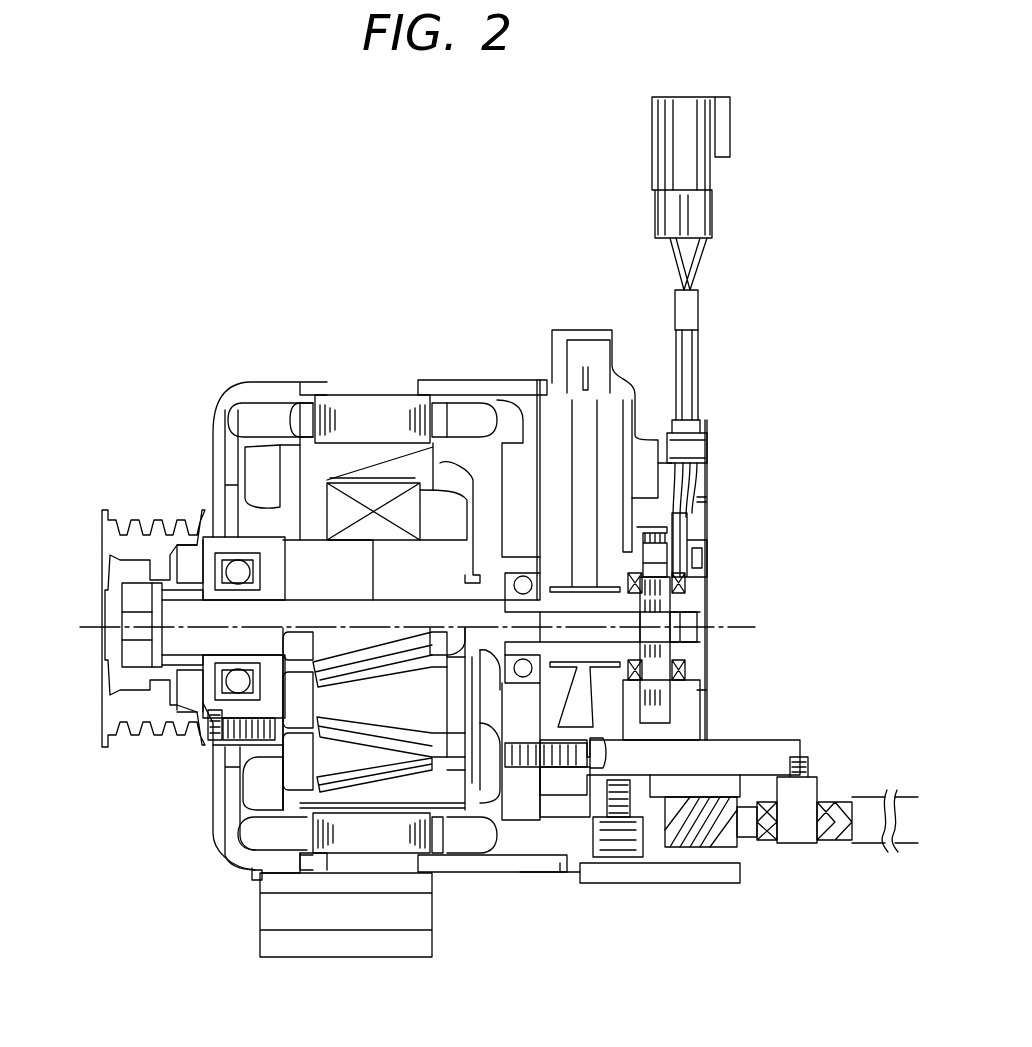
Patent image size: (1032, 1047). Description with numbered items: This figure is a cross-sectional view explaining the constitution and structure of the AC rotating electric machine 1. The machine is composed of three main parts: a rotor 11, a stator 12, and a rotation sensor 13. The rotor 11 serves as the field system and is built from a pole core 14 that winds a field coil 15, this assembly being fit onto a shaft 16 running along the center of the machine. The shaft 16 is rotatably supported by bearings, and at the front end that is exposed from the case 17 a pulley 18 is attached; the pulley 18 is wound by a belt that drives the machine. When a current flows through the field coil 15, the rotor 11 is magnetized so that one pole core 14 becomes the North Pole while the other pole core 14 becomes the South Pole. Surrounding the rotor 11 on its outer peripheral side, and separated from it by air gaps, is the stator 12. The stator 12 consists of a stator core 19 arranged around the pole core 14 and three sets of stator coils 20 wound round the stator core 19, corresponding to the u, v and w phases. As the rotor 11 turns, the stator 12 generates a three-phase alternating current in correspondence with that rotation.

The AC rotating electric machine 1 is at (170, 288).
The rotor 11 is at (300, 523).
The stator 12 is at (340, 397).
The rotation sensor 13 is at (713, 570).
The pole core 14 is at (313, 457).
The field coil 15 is at (340, 507).
The shaft 16 is at (128, 625).
The case 17 is at (500, 390).
The pulley 18 is at (142, 745).
The stator core 19 is at (393, 413).
The stator coils 20 is at (250, 397).